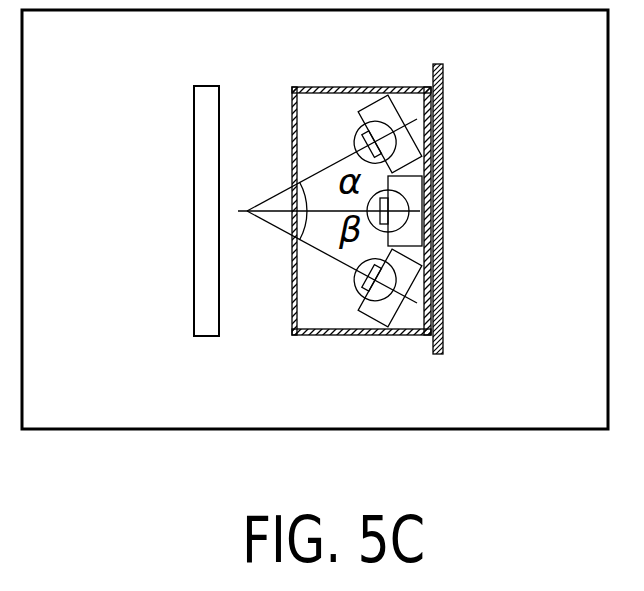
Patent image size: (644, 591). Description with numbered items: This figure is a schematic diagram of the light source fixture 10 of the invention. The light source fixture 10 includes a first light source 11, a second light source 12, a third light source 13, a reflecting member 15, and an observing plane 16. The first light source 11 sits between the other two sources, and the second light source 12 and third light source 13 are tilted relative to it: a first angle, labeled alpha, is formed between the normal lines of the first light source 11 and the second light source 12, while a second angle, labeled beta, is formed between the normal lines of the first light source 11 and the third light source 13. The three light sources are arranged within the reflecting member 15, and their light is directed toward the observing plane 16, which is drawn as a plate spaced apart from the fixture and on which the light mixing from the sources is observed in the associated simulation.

The light source fixture 10 is at (467, 68).
The first light source 11 is at (412, 206).
The second light source 12 is at (420, 152).
The third light source 13 is at (412, 297).
The reflecting member 15 is at (300, 327).
The observing plane 16 is at (205, 170).